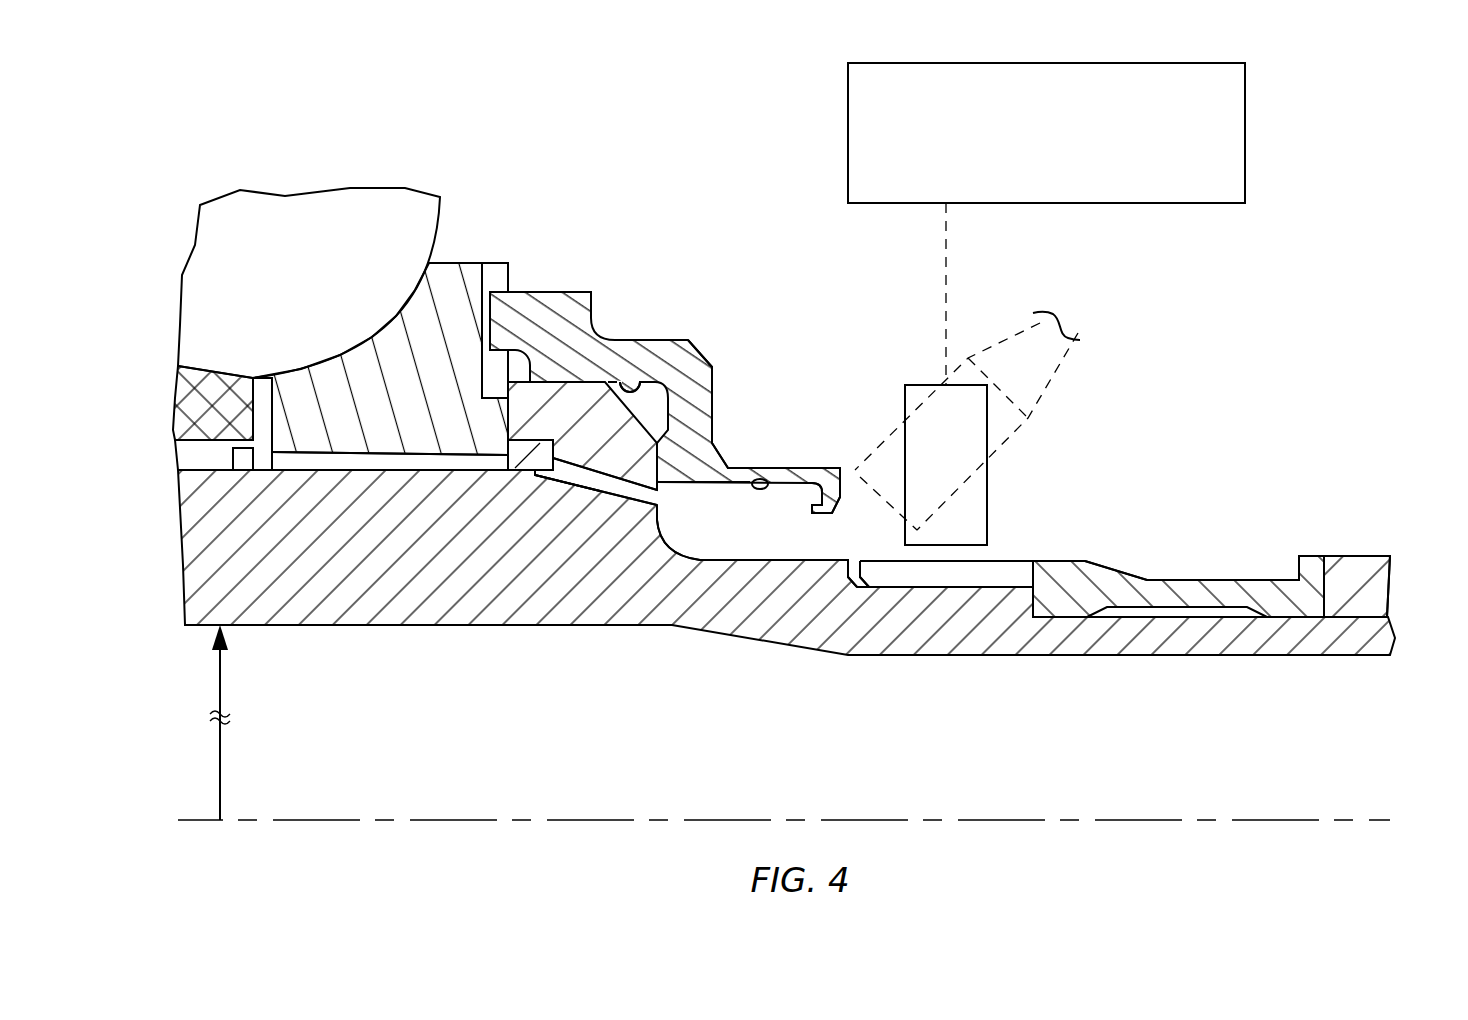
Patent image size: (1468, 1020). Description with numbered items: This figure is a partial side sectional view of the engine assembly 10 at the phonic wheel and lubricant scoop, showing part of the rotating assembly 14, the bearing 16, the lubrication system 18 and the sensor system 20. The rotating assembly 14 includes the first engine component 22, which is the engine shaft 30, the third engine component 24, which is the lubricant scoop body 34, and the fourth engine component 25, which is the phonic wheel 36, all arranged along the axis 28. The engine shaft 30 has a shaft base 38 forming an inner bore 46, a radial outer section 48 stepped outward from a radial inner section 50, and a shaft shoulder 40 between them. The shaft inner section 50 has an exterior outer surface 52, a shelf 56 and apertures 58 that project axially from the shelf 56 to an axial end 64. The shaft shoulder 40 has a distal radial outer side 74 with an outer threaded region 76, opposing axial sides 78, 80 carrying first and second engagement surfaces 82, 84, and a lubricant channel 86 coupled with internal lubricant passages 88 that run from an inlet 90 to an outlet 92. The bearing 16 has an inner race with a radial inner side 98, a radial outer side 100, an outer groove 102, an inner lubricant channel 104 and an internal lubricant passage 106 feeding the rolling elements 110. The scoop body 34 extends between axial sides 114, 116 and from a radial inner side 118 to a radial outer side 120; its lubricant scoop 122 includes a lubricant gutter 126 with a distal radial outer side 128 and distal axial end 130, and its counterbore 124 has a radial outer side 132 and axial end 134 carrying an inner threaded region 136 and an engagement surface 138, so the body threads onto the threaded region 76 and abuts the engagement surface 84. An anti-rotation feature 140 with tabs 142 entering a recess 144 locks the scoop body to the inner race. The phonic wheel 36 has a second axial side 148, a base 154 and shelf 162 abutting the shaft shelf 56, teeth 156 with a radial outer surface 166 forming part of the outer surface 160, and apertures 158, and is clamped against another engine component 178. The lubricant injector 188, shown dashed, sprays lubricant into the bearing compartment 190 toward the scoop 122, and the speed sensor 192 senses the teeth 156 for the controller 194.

The engine assembly 10 is at (275, 252).
The rotating assembly 14 is at (170, 686).
The bearing 16 is at (275, 277).
The lubrication system 18 is at (1098, 314).
The sensor system 20 is at (1104, 211).
The first engine component 22 is at (736, 562).
The third engine component 24 is at (705, 374).
The fourth engine component 25 is at (1238, 580).
The axis 28 is at (293, 822).
The engine shaft 30 is at (736, 562).
The lubricant scoop body 34 is at (705, 374).
The phonic wheel 36 is at (1238, 580).
The shaft base 38 is at (224, 559).
The shaft shoulder 40 is at (579, 430).
The inner bore 46 is at (246, 722).
The radial outer section 48 is at (310, 666).
The radial inner section 50 is at (1110, 676).
The exterior outer surface 52 is at (746, 560).
The shelf 56 is at (1040, 598).
The apertures 58 is at (864, 604).
The axial end 64 is at (862, 590).
The distal radial outer side 74 is at (610, 319).
The outer threaded region 76 is at (562, 380).
The first axial side 78 is at (380, 359).
The second axial side 80 is at (770, 438).
The first engagement surface 82 is at (503, 414).
The second engagement surface 84 is at (700, 450).
The lubricant channel 86 is at (503, 472).
The internal lubricant passages 88 is at (546, 480).
The inlet 90 is at (660, 505).
The outlet 92 is at (535, 478).
The radial inner side 98 is at (190, 480).
The radial outer side 100 is at (443, 262).
The outer groove 102 is at (309, 283).
The inner lubricant channel 104 is at (382, 460).
The internal lubricant passage 106 is at (258, 415).
The rolling elements 110 is at (265, 237).
The first axial side 114 is at (480, 330).
The second axial side 116 is at (848, 483).
The radial inner side 118 is at (848, 583).
The radial outer side 120 is at (528, 292).
The lubricant scoop 122 is at (874, 480).
The counterbore 124 is at (657, 362).
The lubricant gutter 126 is at (735, 504).
The distal radial outer side 128 is at (757, 478).
The distal axial end 130 is at (806, 490).
The radial outer side 132 is at (625, 385).
The axial end 134 is at (712, 378).
The inner threaded region 136 is at (513, 418).
The engagement surface 138 is at (650, 492).
The anti-rotation feature 140 is at (548, 249).
The anti-rotation tabs 142 is at (500, 272).
The recess 144 is at (497, 372).
The second axial side 148 is at (1352, 556).
The base 154 is at (1215, 625).
The teeth 156 is at (1036, 554).
The apertures 158 is at (987, 561).
The outer surface 160 is at (1068, 562).
The shelf 162 is at (1025, 595).
The radial outer surface 166 is at (887, 560).
The other engine component 178 is at (1390, 574).
The lubricant injector 188 is at (1017, 430).
The bearing compartment 190 is at (989, 390).
The speed sensor 192 is at (988, 498).
The controller 194 is at (1247, 168).